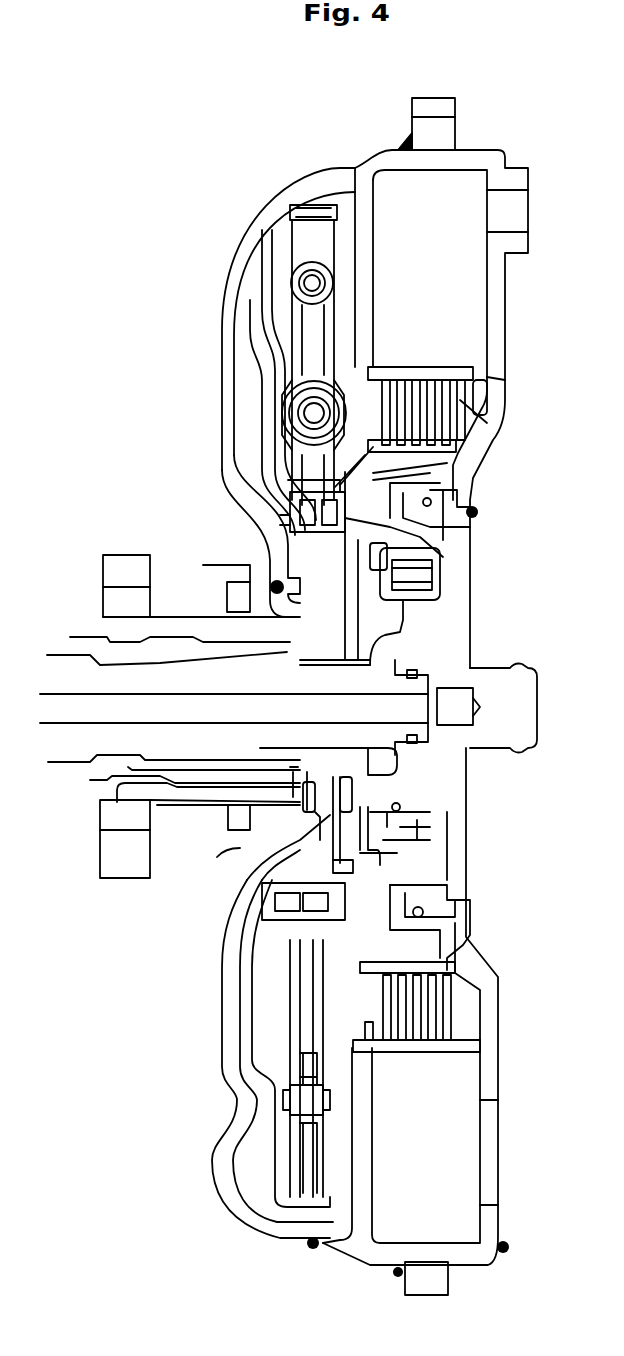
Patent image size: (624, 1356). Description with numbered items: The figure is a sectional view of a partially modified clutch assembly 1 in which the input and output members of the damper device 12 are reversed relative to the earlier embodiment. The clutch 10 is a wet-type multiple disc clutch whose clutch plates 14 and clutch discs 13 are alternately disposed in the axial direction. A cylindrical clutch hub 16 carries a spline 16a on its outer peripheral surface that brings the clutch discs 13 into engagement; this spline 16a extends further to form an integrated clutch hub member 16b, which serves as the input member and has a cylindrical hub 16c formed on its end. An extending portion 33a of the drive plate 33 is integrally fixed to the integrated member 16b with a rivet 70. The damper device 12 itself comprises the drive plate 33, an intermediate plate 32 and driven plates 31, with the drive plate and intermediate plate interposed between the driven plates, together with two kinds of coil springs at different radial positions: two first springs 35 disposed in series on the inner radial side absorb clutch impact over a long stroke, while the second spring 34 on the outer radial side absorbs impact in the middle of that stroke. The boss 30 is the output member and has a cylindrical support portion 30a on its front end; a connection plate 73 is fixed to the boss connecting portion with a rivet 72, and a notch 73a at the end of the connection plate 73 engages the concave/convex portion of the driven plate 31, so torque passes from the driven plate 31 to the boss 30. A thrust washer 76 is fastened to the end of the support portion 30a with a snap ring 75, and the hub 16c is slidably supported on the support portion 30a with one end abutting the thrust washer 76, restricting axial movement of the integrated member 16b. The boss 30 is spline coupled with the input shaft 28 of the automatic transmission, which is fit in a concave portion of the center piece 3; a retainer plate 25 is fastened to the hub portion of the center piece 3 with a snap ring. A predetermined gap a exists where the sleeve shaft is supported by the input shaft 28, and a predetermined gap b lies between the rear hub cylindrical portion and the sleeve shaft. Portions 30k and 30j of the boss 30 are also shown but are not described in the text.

The clutch assembly 1 is at (258, 148).
The damper device 12 is at (236, 178).
The clutch discs 13 is at (480, 405).
The clutch 10 is at (433, 367).
The clutch plates 14 is at (399, 370).
The clutch hub 16 is at (457, 458).
The spline 16a is at (458, 430).
The integrated clutch hub member 16b is at (450, 492).
The cylindrical hub 16c is at (450, 563).
The rivet 70 is at (452, 530).
The connection plate 73 is at (258, 380).
The notch 73a is at (327, 207).
The second spring 34 is at (300, 282).
The first springs 35 is at (273, 410).
The driven plate 31 is at (283, 242).
The intermediate plate 32 is at (260, 465).
The drive plate 33 is at (300, 350).
The pressure plate portion 30k is at (300, 483).
The pressure plate portion 30j is at (313, 495).
The rivet 72 is at (287, 515).
The gap b is at (123, 637).
The gap a is at (120, 657).
The retainer plate 25 is at (375, 612).
The center piece 3 is at (524, 695).
The input shaft 28 is at (62, 755).
The boss 30 is at (360, 795).
The snap ring 75 is at (380, 850).
The thrust washer 76 is at (400, 886).
The cylindrical support portion 30a is at (263, 880).
The extending portion 33a is at (273, 922).